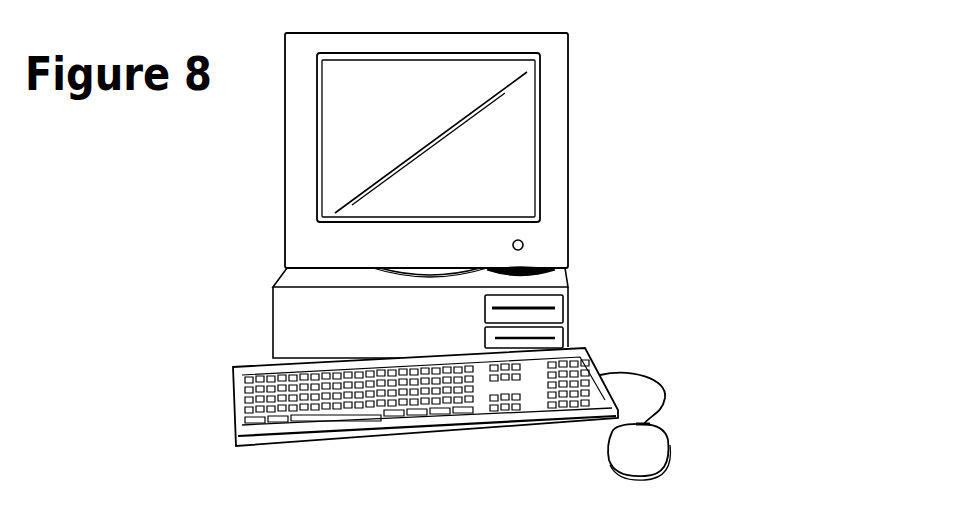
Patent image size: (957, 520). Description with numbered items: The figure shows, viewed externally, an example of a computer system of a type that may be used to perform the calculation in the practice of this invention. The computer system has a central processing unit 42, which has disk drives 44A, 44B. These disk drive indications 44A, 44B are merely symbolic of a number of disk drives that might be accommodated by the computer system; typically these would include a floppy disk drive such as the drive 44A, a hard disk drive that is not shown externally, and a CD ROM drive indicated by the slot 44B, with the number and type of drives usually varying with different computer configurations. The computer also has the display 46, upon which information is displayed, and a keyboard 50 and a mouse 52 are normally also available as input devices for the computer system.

The central processing unit 42 is at (252, 268).
The display 46 is at (568, 92).
The floppy disk drive 44A is at (556, 313).
The CD ROM drive slot 44B is at (556, 336).
The keyboard 50 is at (233, 406).
The mouse 52 is at (648, 447).